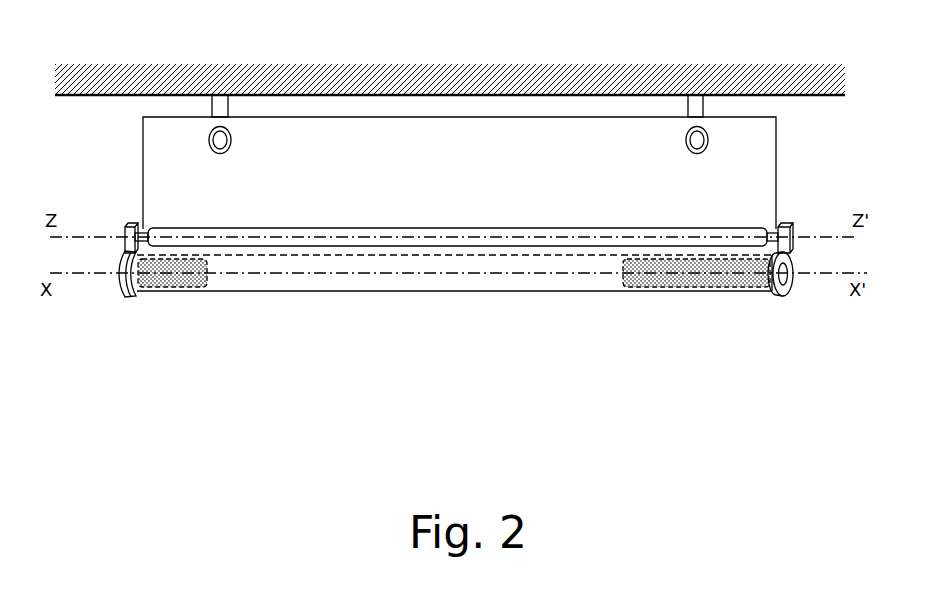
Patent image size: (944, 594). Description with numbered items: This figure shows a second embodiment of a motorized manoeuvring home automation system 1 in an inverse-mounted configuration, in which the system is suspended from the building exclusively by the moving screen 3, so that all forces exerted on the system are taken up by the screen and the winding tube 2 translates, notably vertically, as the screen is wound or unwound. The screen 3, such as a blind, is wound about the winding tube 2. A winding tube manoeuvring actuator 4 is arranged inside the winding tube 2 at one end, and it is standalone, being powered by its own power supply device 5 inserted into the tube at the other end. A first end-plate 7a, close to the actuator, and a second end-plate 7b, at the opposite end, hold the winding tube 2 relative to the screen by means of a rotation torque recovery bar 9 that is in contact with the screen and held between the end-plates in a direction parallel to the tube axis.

The motorized manoeuvring home automation system 1 is at (786, 404).
The winding tube 2 is at (540, 273).
The moving screen 3 is at (348, 130).
The winding tube manoeuvring actuator 4 is at (198, 277).
The power supply device 5 is at (665, 275).
The first end-plate 7a is at (119, 283).
The second end-plate 7b is at (795, 280).
The rotation torque recovery bar 9 is at (422, 232).